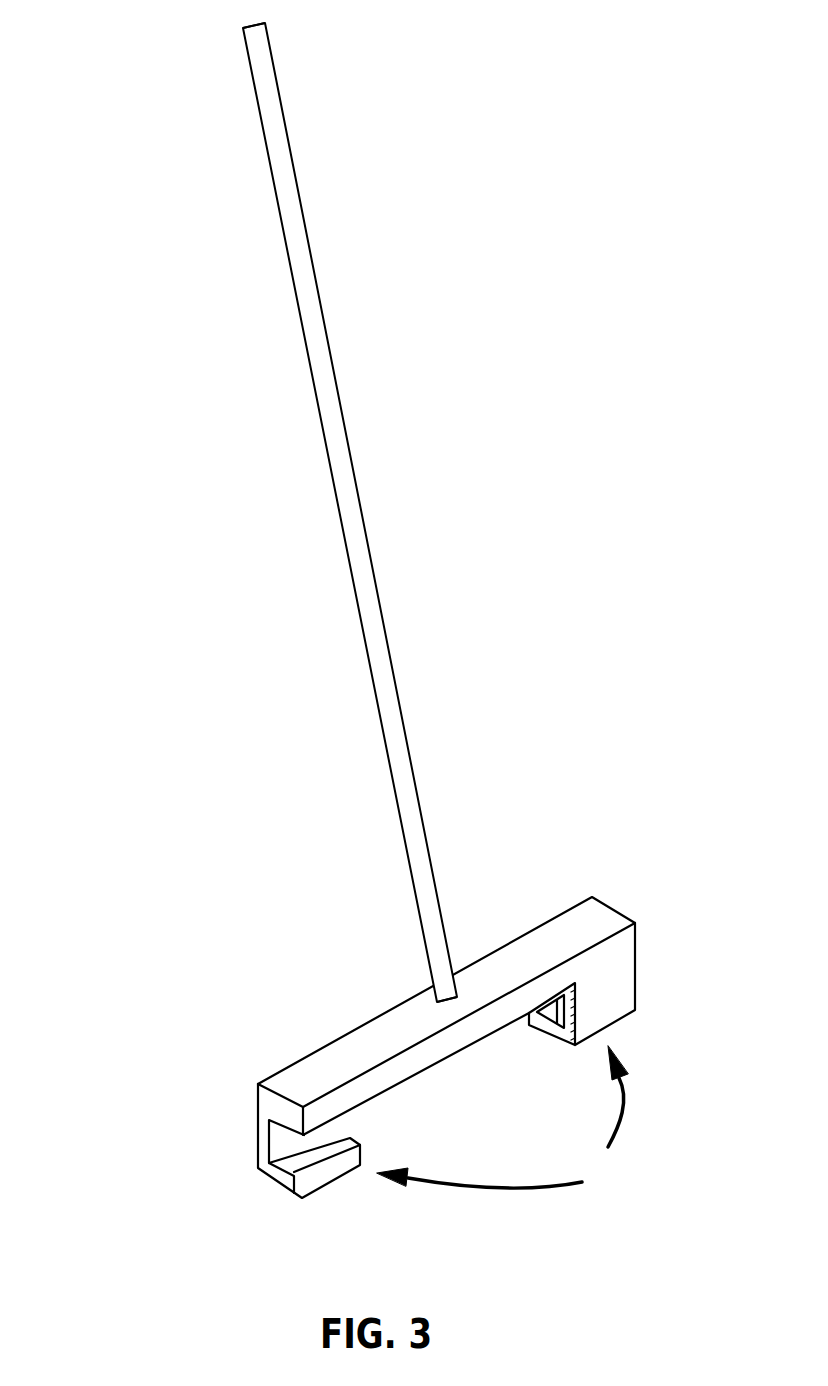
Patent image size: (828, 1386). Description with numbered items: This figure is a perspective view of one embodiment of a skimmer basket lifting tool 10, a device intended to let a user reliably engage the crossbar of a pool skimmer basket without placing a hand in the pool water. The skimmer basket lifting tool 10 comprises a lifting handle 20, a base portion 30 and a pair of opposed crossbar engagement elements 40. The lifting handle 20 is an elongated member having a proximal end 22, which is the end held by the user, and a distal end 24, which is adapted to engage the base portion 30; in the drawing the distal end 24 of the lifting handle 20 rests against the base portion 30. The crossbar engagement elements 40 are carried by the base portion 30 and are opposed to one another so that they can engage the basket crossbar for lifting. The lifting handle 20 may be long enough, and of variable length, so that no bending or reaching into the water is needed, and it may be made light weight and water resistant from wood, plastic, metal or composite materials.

The skimmer basket lifting tool 10 is at (381, 610).
The lifting handle 20 is at (307, 512).
The proximal end 22 is at (258, 52).
The distal end 24 is at (432, 989).
The base portion 30 is at (518, 957).
The crossbar engagement elements 40 is at (502, 1117).